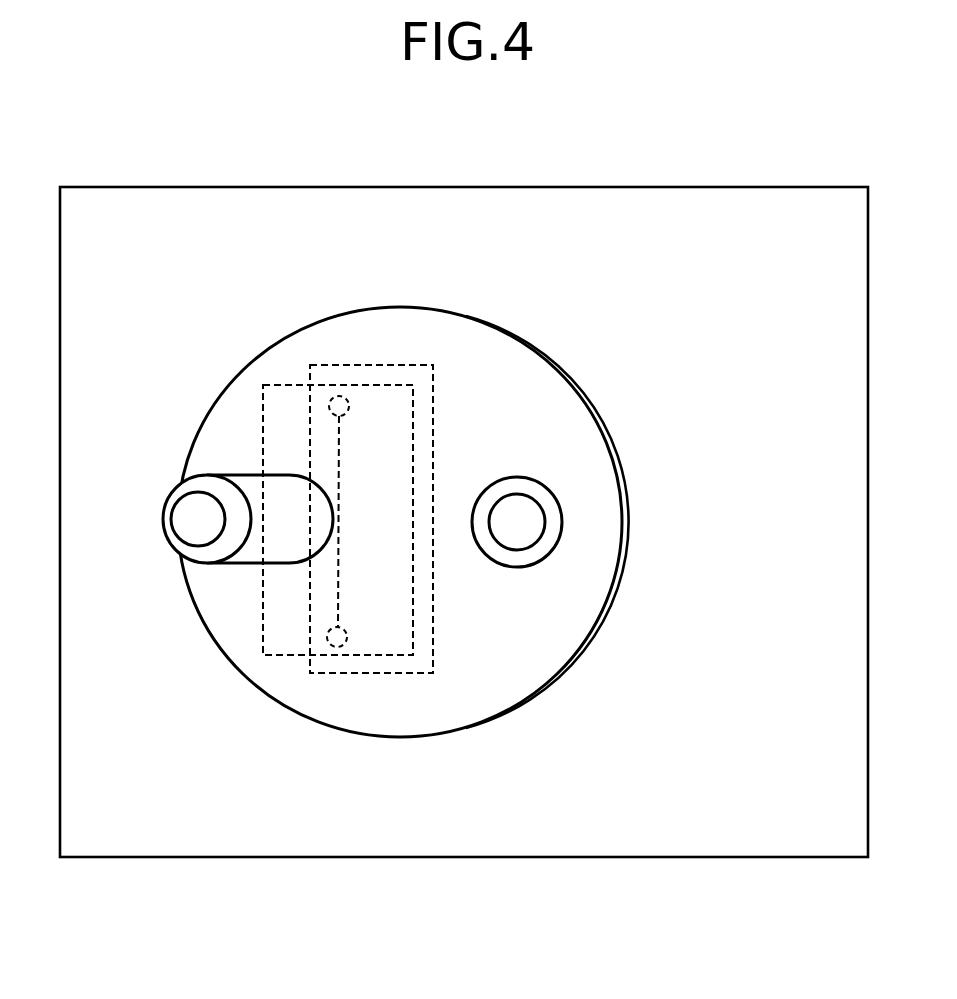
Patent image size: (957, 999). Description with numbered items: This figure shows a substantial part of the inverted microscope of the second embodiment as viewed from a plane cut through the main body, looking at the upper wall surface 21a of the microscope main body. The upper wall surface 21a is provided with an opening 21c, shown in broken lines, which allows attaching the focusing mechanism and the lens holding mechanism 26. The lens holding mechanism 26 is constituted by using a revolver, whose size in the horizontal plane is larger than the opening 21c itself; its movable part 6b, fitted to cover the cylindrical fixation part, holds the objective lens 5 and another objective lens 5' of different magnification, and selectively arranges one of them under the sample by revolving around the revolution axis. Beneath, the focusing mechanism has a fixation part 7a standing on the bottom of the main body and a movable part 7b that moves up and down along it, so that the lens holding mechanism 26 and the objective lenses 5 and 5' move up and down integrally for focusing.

The upper wall surface 21a is at (488, 187).
The lens holding mechanism 26 is at (217, 345).
The movable part 6b is at (550, 352).
The objective lens 5 is at (561, 569).
The objective lens 5' is at (248, 582).
The fixation part 7a is at (292, 655).
The movable part 7b is at (370, 675).
The opening 21c is at (383, 364).